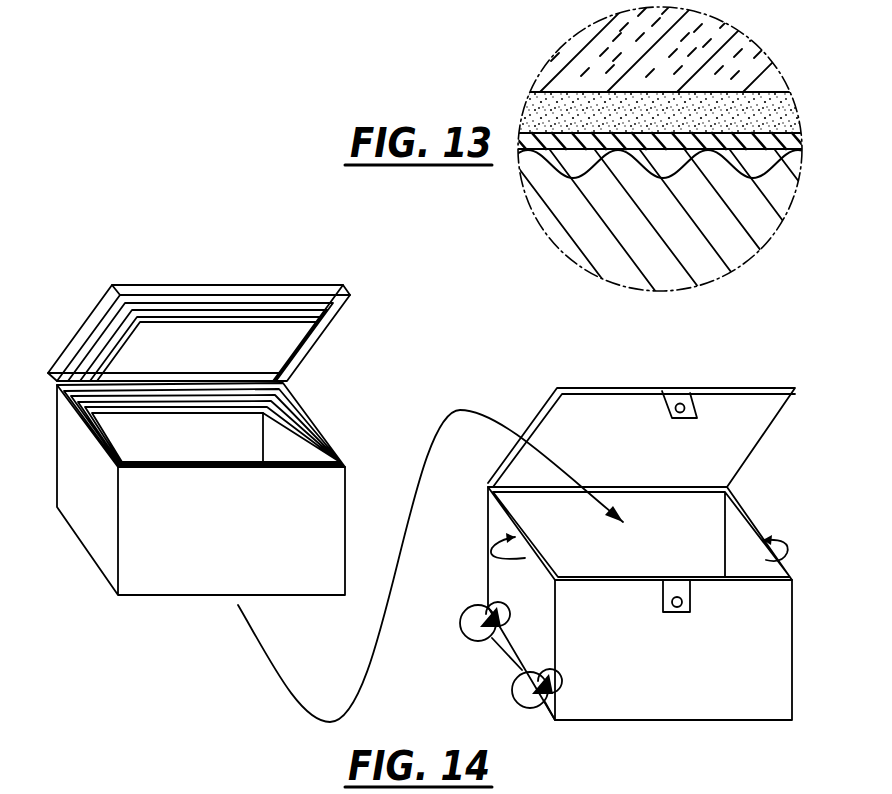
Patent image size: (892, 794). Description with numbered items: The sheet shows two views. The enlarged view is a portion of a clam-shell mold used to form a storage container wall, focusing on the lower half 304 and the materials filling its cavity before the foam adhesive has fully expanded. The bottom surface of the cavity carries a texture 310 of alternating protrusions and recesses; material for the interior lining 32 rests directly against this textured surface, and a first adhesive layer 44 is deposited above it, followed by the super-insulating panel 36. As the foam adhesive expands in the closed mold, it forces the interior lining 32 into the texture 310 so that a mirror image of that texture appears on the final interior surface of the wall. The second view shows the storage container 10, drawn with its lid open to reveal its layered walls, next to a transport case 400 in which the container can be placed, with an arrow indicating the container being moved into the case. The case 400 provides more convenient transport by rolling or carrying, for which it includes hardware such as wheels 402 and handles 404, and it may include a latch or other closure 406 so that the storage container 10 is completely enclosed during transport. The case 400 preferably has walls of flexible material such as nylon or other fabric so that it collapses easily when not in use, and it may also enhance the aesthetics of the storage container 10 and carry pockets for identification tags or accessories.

In FIG. 14, the storage container 10 is at (118, 247).
In FIG. 13, the super-insulating panel 36 is at (738, 50).
In FIG. 13, the first adhesive layer 44 is at (773, 100).
In FIG. 13, the interior lining 32 is at (800, 140).
In FIG. 13, the texture 310 is at (783, 163).
In FIG. 13, the lower half 304 is at (763, 220).
In FIG. 14, the transport case 400 is at (650, 538).
In FIG. 14, the wheels 402 is at (492, 639).
In FIG. 14, the handles 404 is at (490, 555).
In FIG. 14, the closure 406 is at (681, 403).